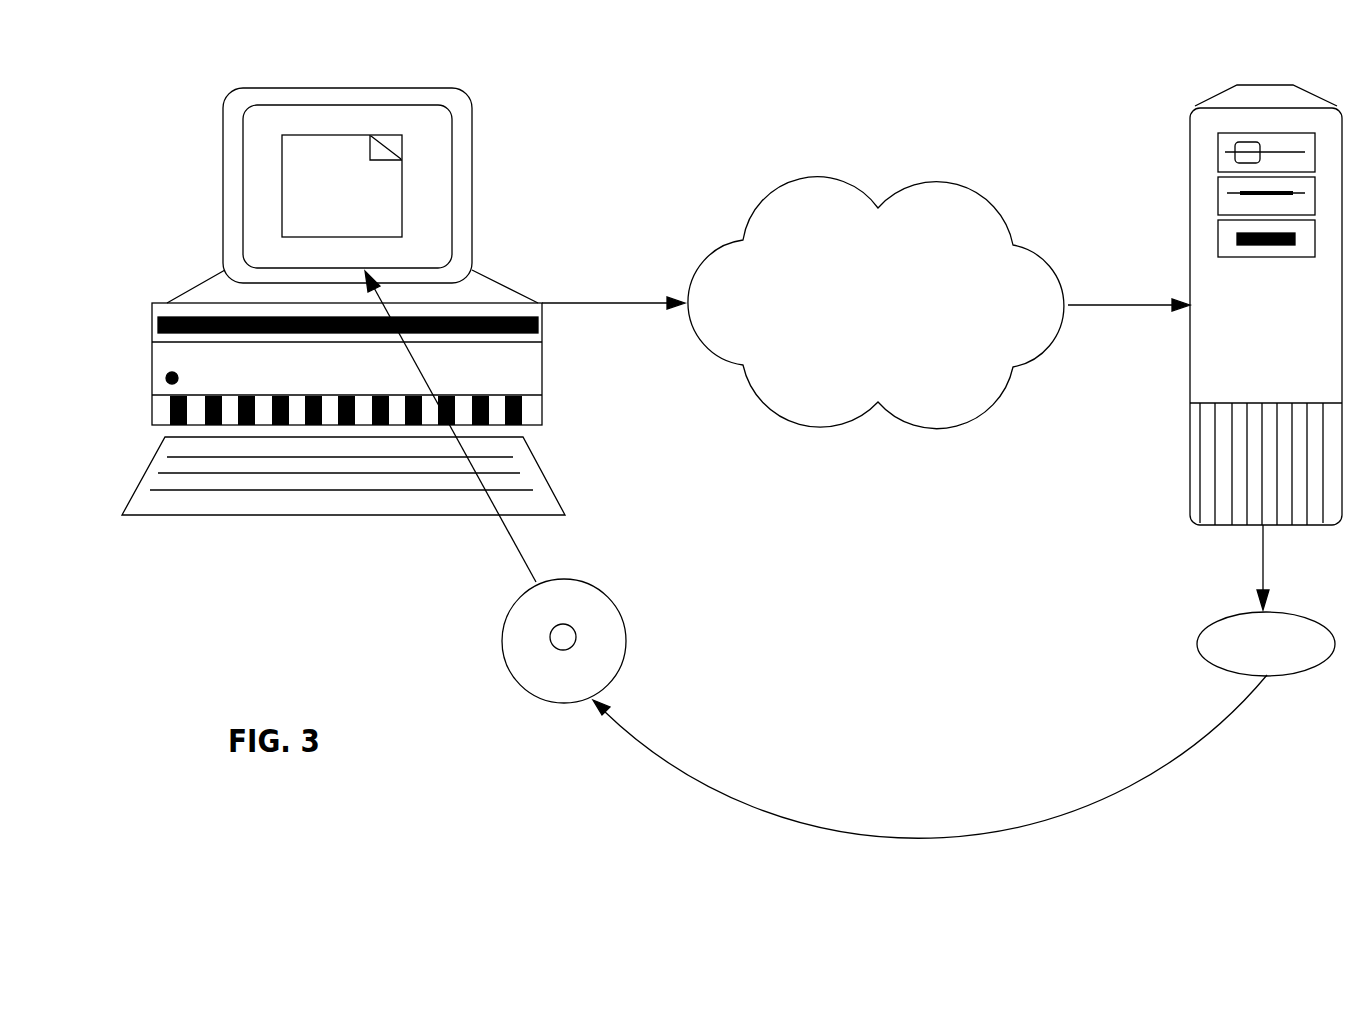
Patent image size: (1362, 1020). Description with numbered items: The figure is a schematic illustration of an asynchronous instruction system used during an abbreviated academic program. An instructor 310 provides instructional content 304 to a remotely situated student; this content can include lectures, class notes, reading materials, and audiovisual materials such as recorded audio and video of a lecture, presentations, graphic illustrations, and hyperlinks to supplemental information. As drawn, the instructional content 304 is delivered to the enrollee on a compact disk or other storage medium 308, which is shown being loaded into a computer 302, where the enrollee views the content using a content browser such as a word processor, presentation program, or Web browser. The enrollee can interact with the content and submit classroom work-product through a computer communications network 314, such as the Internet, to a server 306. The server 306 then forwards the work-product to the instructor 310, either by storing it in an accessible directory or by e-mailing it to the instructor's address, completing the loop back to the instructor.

The computer 302 is at (473, 188).
The instructional content 304 is at (282, 187).
The server 306 is at (1187, 417).
The storage medium 308 is at (610, 595).
The instructor 310 is at (1197, 647).
The computer communications network 314 is at (970, 191).